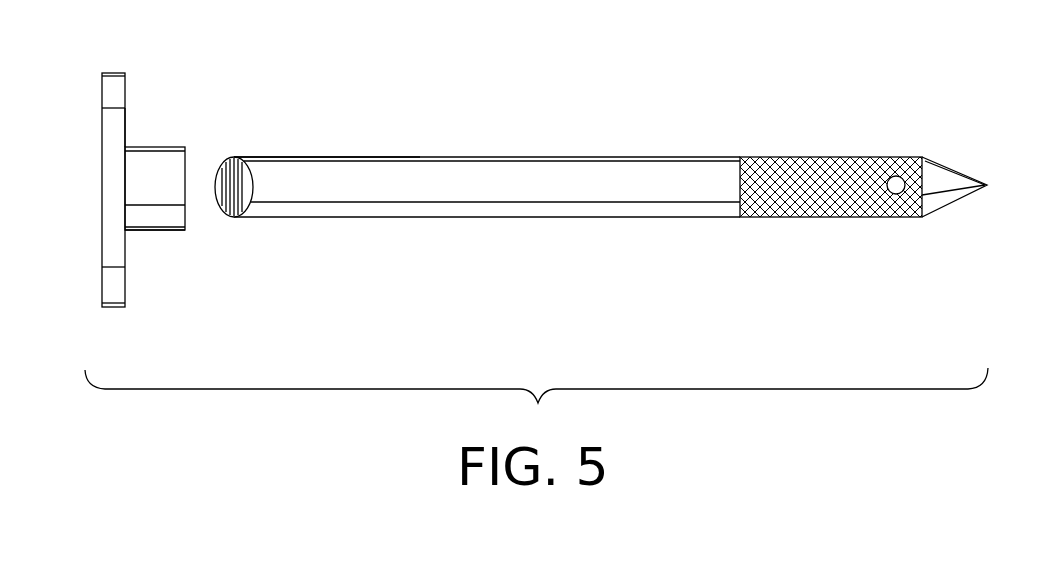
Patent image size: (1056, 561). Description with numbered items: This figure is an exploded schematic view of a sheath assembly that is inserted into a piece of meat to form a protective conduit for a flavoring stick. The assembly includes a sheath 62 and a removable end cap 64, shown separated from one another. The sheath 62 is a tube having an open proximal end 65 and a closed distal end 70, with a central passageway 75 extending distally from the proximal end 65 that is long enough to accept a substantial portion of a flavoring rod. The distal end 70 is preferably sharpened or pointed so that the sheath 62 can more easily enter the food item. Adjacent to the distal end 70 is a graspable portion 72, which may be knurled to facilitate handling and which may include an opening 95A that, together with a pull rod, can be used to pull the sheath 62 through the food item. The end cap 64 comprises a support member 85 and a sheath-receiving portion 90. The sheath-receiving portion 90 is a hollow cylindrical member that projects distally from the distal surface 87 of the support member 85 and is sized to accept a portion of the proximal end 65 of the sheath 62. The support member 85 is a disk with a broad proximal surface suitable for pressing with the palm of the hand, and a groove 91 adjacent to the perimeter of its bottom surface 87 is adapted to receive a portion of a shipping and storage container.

The sheath 62 is at (525, 242).
The removable end cap 64 is at (158, 252).
The open proximal end 65 is at (323, 153).
The closed distal end 70 is at (997, 168).
The graspable portion 72 is at (803, 147).
The central passageway 75 is at (220, 210).
The support member 85 is at (98, 135).
The distal surface 87 is at (127, 138).
The sheath-receiving portion 90 is at (175, 163).
The groove 91 is at (133, 100).
The opening 95A is at (897, 200).